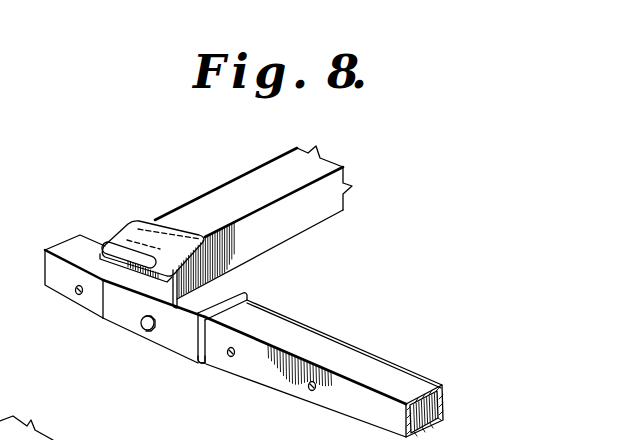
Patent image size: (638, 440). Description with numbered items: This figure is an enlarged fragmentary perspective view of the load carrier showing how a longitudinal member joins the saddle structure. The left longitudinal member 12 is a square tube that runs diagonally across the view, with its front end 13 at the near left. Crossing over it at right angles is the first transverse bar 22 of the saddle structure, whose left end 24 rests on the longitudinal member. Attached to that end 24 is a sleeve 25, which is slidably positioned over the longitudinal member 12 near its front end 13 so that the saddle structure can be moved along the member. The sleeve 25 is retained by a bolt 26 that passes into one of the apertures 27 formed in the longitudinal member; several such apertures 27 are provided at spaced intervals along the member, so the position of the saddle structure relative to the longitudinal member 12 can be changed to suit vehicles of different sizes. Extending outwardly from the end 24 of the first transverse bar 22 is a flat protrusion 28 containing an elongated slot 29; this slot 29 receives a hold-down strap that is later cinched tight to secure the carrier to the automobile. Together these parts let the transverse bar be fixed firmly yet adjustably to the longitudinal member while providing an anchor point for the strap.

The left longitudinal member 12 is at (328, 337).
The front end 13 is at (66, 237).
The first transverse bar 22 is at (315, 226).
The left end 24 is at (204, 336).
The sleeve 25 is at (203, 366).
The bolt 26 is at (146, 331).
The aperture 27 is at (78, 293).
The protrusion 28 is at (105, 233).
The slot 29 is at (128, 258).